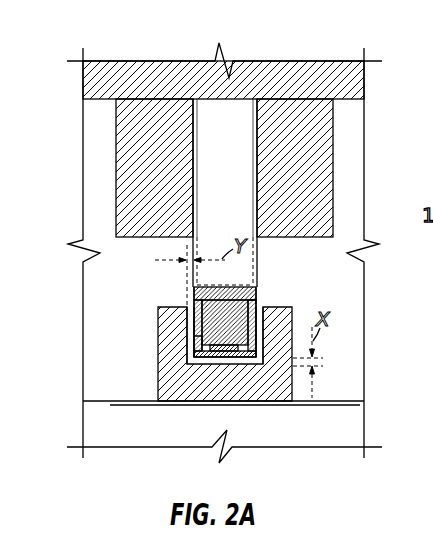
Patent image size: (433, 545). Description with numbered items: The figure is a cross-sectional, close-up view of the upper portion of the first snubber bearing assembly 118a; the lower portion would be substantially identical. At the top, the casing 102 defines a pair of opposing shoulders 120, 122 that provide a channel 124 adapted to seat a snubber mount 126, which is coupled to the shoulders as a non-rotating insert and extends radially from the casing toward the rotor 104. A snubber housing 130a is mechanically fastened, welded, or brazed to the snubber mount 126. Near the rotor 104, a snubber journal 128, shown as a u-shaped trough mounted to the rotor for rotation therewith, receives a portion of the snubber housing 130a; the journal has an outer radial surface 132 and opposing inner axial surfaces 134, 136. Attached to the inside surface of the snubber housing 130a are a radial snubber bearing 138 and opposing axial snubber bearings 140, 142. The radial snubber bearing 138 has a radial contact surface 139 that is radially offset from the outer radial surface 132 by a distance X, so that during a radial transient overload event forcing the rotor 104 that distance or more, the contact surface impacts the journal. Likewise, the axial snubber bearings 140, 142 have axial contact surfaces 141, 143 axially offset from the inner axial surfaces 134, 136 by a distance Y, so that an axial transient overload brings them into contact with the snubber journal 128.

The casing 102 is at (292, 68).
The rotor 104 is at (116, 438).
The first snubber bearing assembly 118a is at (120, 295).
The shoulder 120 is at (116, 162).
The shoulder 122 is at (333, 162).
The channel 124 is at (233, 100).
The snubber mount 126 is at (240, 206).
The snubber journal 128 is at (280, 395).
The snubber housing 130a is at (207, 293).
The outer radial surface 132 is at (200, 362).
The inner axial surface 134 is at (194, 323).
The inner axial surface 136 is at (263, 334).
The radial snubber bearing 138 is at (222, 357).
The radial contact surface 139 is at (240, 357).
The axial snubber bearing 140 is at (195, 338).
The axial contact surface 141 is at (195, 303).
The axial snubber bearing 142 is at (252, 318).
The axial contact surface 143 is at (254, 302).